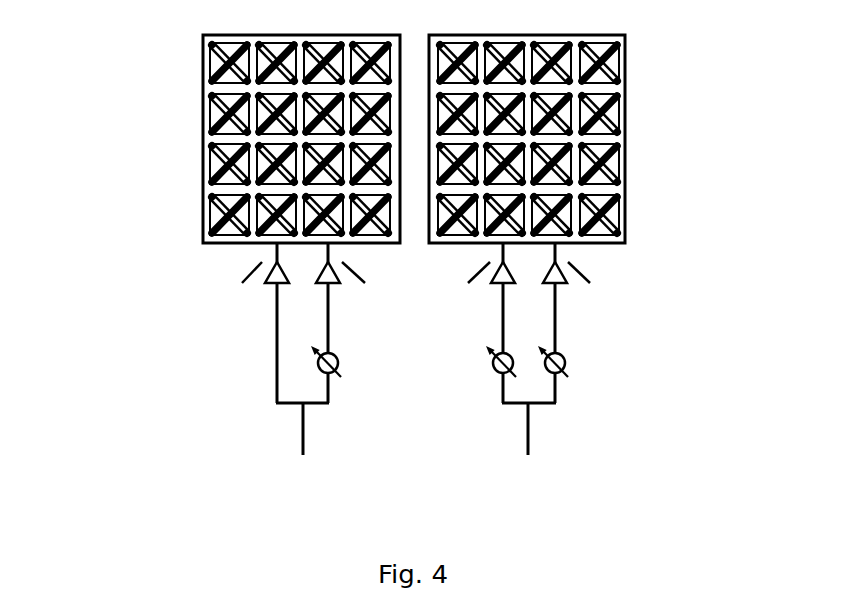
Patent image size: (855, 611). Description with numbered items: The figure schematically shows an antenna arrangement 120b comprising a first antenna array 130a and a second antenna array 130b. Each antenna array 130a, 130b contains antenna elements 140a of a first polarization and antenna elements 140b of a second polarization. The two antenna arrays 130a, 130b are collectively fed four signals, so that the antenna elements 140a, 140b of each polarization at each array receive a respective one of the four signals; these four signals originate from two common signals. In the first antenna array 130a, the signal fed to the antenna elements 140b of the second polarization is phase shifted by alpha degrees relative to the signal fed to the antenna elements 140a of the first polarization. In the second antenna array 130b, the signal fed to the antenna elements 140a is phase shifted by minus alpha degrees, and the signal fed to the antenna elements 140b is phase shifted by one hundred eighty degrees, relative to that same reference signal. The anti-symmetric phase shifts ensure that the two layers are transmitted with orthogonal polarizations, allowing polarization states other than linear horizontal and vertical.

The antenna arrangement 120b is at (106, 358).
The first antenna array 130a is at (203, 193).
The second antenna array 130b is at (625, 193).
The antenna elements of a first polarization 140a is at (213, 112).
The antenna elements of a second polarization 140b is at (213, 62).